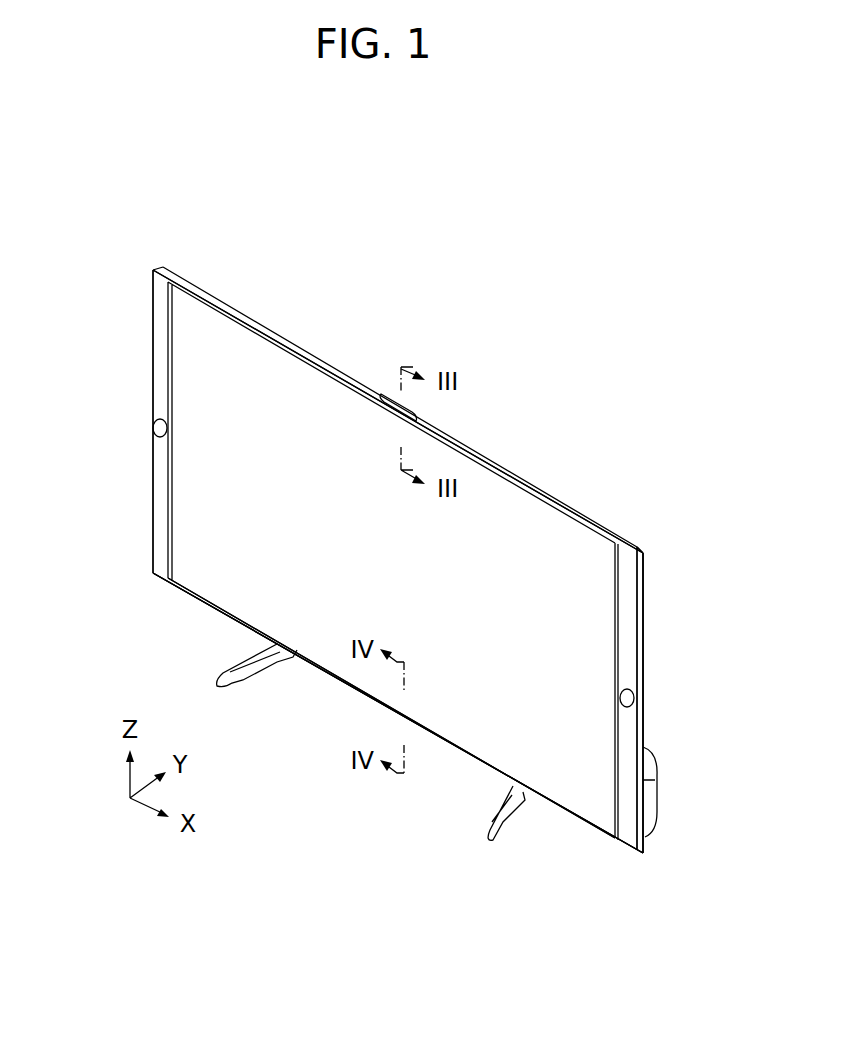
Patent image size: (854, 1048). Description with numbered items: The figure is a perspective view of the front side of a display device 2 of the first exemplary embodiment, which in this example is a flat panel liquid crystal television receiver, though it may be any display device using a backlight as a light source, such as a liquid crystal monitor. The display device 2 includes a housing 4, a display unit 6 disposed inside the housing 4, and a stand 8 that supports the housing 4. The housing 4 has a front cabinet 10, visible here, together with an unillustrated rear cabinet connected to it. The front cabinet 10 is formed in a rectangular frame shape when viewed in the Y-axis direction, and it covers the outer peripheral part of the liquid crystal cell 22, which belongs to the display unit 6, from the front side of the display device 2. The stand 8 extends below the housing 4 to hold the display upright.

The display device 2 is at (512, 335).
The housing 4 is at (640, 600).
The display unit 6 is at (198, 521).
The stand 8 is at (502, 823).
The front cabinet 10 is at (627, 660).
The liquid crystal cell 22 is at (207, 568).